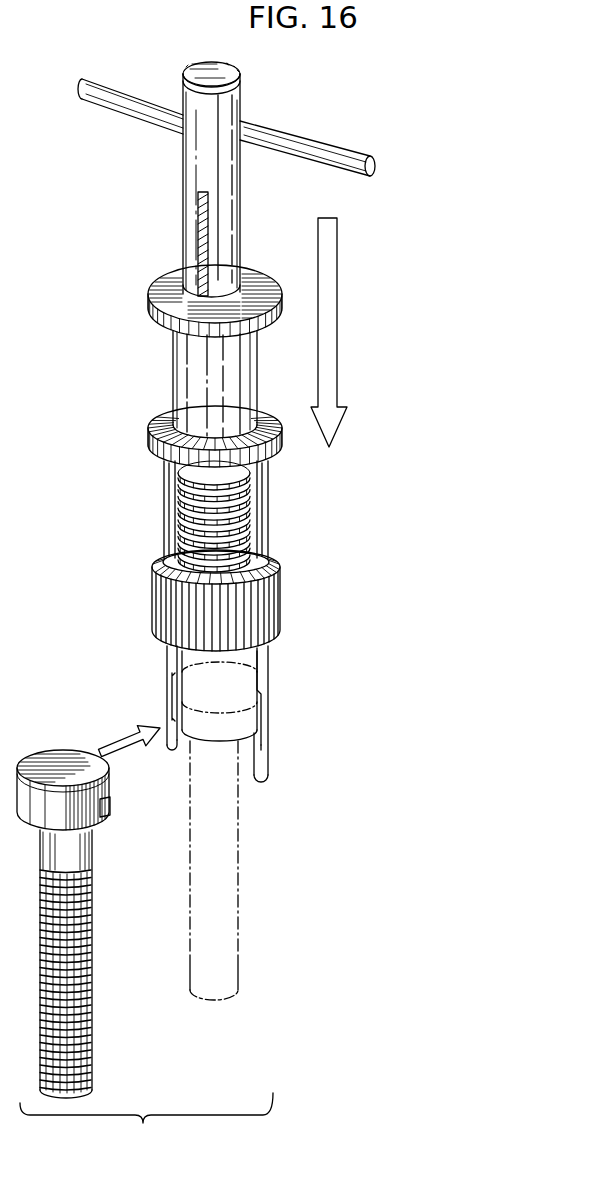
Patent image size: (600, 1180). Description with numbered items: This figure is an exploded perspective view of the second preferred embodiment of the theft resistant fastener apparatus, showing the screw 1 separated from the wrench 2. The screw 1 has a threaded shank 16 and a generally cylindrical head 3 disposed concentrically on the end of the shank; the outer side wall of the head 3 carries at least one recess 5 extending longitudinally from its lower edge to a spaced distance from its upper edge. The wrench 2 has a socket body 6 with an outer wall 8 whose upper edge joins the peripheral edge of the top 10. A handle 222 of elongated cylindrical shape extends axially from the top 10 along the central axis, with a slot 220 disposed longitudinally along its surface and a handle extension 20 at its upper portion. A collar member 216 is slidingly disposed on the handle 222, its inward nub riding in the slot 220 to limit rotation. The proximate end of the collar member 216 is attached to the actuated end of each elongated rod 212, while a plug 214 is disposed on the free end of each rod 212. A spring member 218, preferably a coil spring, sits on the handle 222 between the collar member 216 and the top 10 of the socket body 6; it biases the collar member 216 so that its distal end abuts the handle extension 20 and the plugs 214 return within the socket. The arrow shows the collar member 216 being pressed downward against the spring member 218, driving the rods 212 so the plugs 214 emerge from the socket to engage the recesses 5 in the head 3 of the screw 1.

The screw 1 is at (104, 969).
The generally cylindrical head 3 is at (53, 740).
The recess 5 is at (112, 824).
The threaded shank 16 is at (92, 1048).
The handle extension 20 is at (148, 97).
The wrench 2 is at (158, 343).
The collar member 216 is at (173, 374).
The elongated rod 212 is at (165, 486).
The plug 214 is at (175, 752).
The spring member 218 is at (246, 537).
The top 10 is at (160, 548).
The socket body 6 is at (290, 604).
The outer wall 8 is at (280, 622).
The slot 220 is at (197, 240).
The handle 222 is at (184, 192).